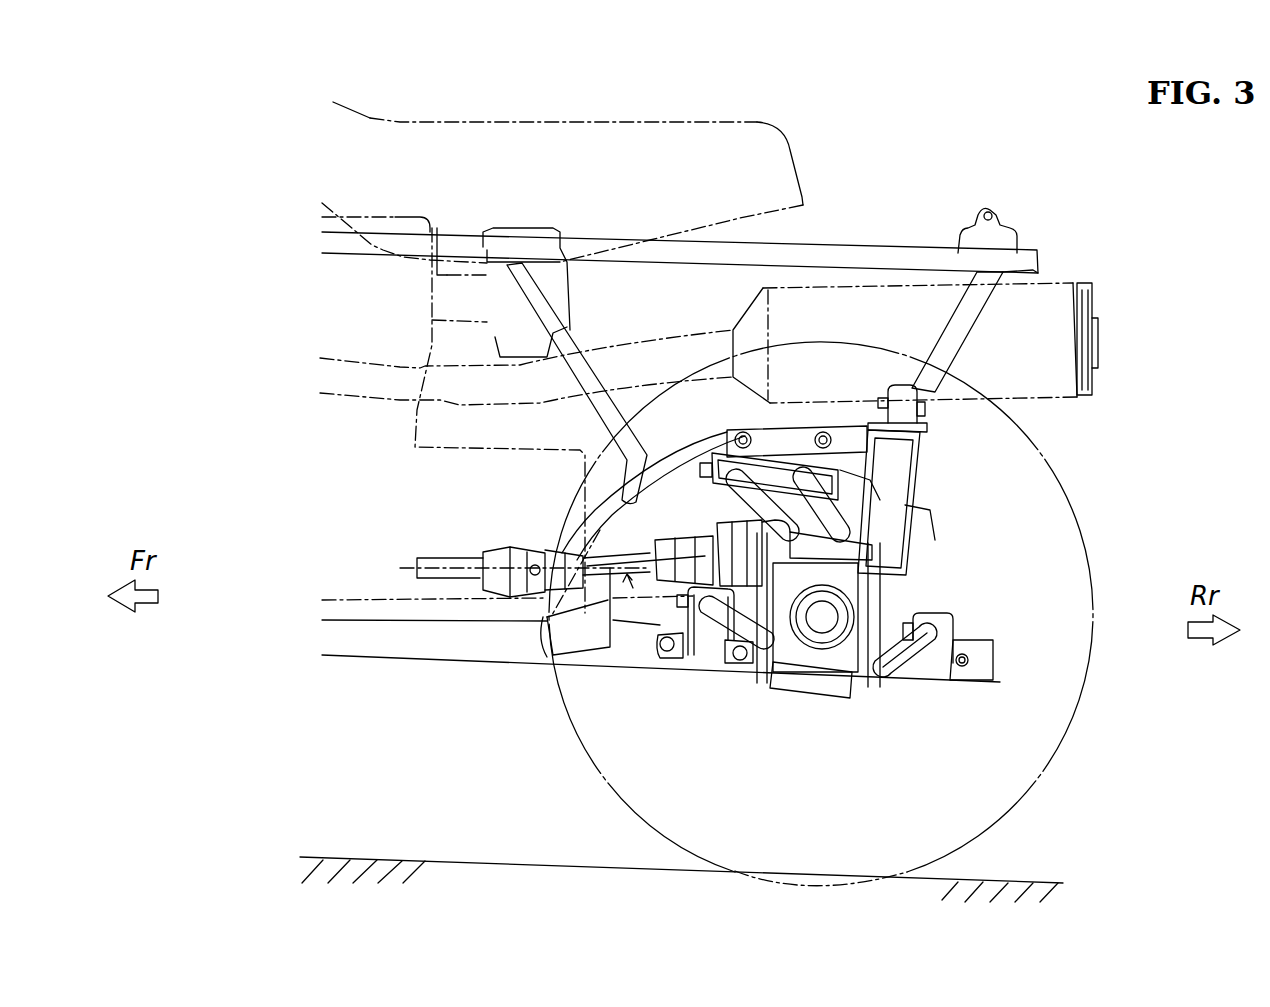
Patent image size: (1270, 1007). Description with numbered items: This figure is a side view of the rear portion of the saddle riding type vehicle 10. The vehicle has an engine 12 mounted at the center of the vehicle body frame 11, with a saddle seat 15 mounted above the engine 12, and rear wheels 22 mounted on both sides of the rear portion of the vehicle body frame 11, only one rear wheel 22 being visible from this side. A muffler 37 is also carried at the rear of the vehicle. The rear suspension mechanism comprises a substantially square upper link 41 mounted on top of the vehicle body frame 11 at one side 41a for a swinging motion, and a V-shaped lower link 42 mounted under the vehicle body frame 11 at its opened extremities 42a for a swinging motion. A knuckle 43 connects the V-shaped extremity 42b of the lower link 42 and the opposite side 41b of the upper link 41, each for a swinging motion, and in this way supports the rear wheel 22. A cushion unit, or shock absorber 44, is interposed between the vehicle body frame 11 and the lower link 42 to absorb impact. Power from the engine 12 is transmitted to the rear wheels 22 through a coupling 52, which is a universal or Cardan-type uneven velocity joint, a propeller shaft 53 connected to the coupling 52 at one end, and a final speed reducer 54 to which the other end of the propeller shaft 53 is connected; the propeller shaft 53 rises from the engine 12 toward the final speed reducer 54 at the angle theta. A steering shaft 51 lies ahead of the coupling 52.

The saddle riding type vehicle 10 is at (248, 128).
The vehicle body frame 11 is at (850, 243).
The engine 12 is at (397, 216).
The saddle seat 15 is at (790, 150).
The rear wheel 22 is at (1070, 513).
The muffler 37 is at (1098, 347).
The upper link 41 is at (877, 480).
The one side of the upper link 41a is at (767, 473).
The opposite side of the upper link 41b is at (853, 548).
The lower link 42 is at (905, 675).
The opened extremities of the lower link 42a is at (668, 625).
The V-shaped extremity of the lower link 42b is at (813, 687).
The knuckle 43 is at (800, 660).
The shock absorber 44 is at (915, 510).
The steering shaft 51 is at (420, 552).
The coupling 52 is at (500, 555).
The propeller shaft 53 is at (630, 545).
The final speed reducer 54 is at (863, 517).